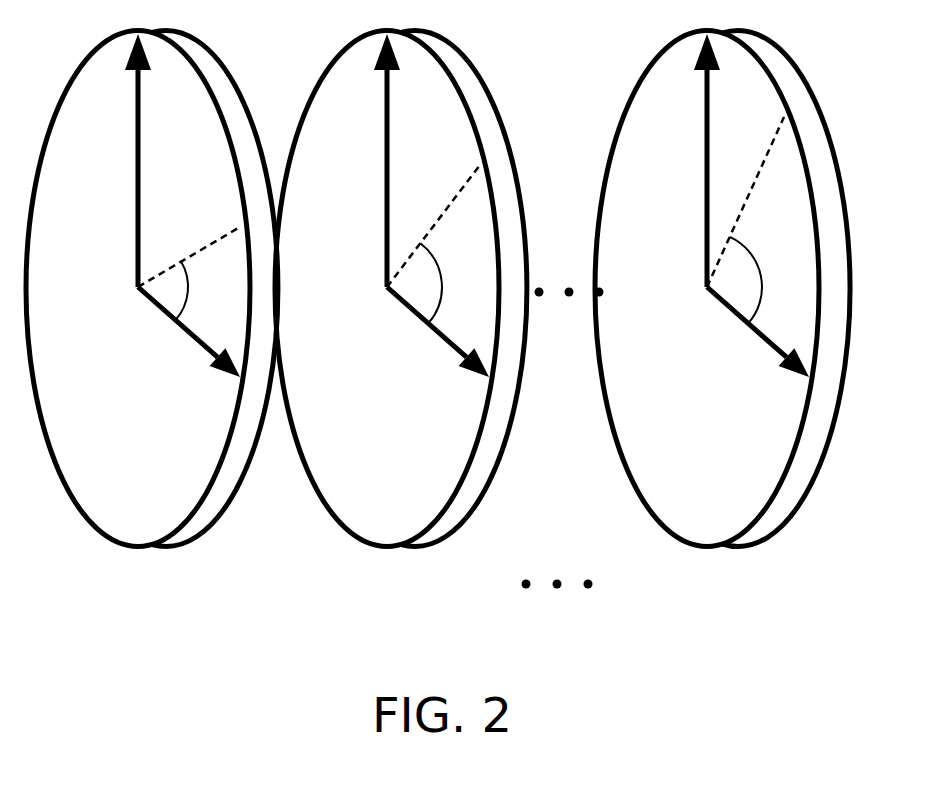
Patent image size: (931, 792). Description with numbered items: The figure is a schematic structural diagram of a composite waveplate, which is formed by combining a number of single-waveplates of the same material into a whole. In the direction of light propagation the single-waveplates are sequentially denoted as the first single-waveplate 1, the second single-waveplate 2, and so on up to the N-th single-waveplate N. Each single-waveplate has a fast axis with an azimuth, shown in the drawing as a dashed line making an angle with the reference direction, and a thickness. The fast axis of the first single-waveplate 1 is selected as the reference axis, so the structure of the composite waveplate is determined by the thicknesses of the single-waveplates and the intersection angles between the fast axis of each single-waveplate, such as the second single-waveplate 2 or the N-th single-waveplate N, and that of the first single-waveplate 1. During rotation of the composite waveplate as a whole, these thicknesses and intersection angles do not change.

The first single-waveplate 1 is at (152, 329).
The second single-waveplate 2 is at (401, 329).
The N-th single-waveplate N is at (722, 329).